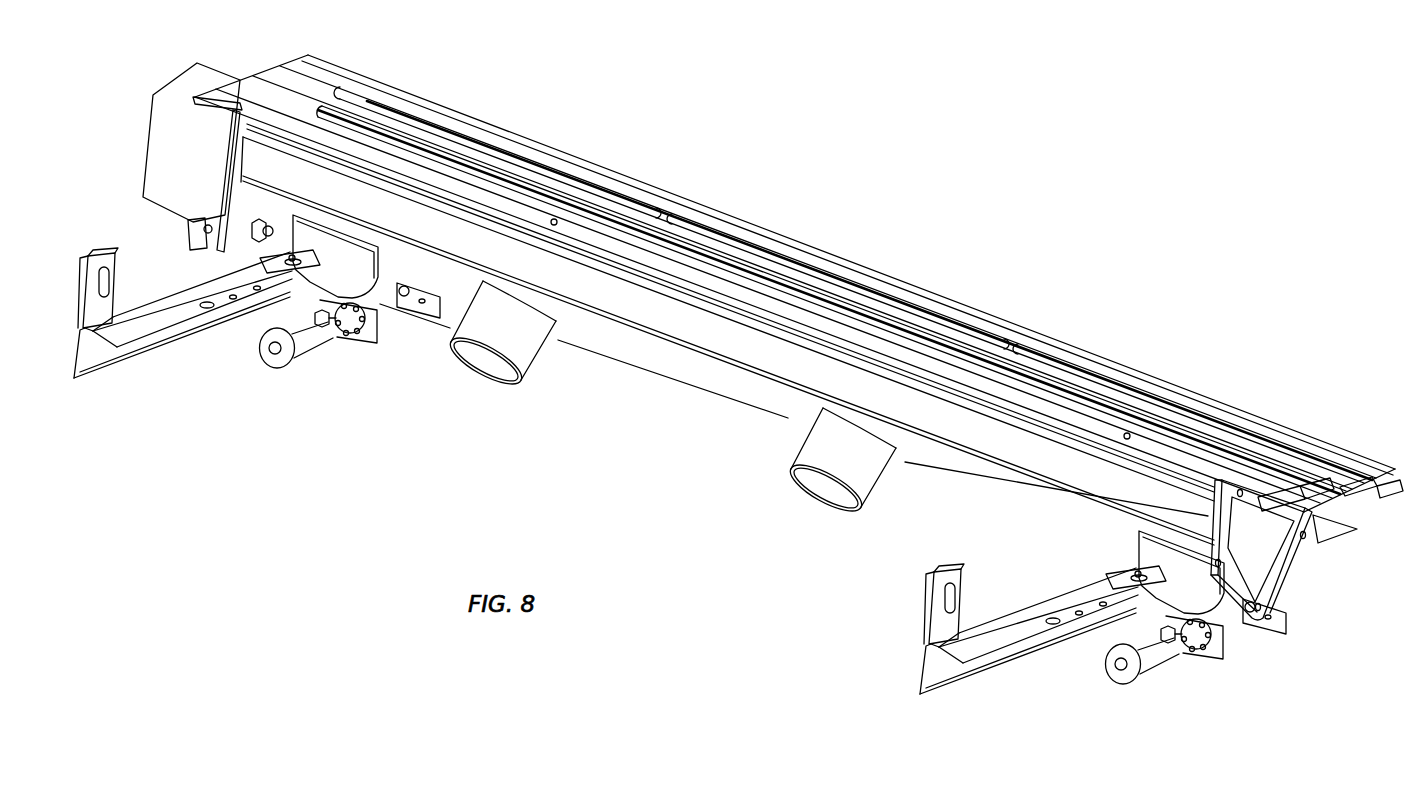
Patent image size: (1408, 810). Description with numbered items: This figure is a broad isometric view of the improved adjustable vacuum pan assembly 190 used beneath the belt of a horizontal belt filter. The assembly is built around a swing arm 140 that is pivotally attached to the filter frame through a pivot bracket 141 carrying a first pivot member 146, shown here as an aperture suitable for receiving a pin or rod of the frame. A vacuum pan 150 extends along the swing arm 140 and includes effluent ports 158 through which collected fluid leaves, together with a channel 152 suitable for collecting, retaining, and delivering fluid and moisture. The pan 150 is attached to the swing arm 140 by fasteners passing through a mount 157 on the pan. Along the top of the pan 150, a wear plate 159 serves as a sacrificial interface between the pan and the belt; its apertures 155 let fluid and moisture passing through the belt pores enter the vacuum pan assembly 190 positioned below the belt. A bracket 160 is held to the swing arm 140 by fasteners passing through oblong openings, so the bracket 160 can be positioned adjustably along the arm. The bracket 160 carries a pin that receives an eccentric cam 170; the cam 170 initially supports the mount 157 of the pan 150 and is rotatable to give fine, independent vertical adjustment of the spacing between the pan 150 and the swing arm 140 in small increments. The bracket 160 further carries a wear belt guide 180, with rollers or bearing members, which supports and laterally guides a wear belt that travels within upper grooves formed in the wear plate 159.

The swing arm 140 is at (166, 314).
The pivot bracket 141 is at (97, 263).
The first pivot member 146 is at (118, 268).
The vacuum pan 150 is at (1090, 336).
The channel 152 is at (1248, 553).
The apertures 155 is at (578, 185).
The mount 157 is at (348, 254).
The effluent port 158 is at (527, 348).
The wear plate 159 is at (346, 96).
The bracket 160 is at (404, 307).
The cam 170 is at (353, 326).
The wear belt guide 180 is at (306, 334).
The vacuum pan assembly 190 is at (230, 383).